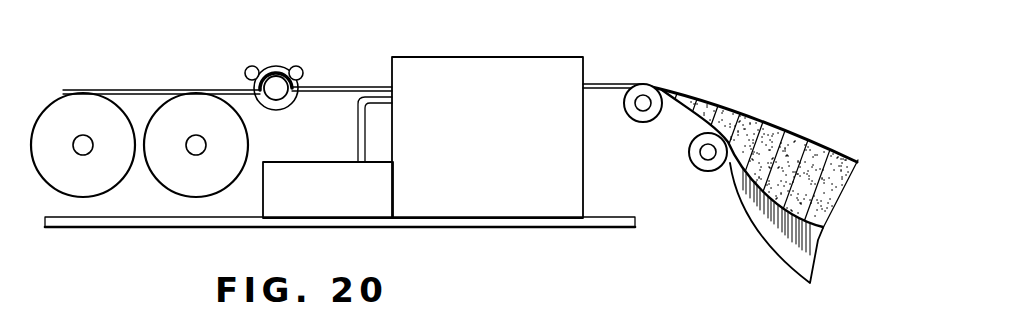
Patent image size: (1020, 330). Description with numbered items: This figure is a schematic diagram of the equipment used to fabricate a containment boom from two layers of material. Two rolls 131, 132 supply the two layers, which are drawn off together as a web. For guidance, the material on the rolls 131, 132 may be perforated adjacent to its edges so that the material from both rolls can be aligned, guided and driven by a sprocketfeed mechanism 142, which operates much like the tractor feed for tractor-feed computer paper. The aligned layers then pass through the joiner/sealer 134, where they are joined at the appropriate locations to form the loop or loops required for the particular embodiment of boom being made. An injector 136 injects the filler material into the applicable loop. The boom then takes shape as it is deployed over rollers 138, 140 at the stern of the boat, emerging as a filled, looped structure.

The roll 131 is at (68, 102).
The roll 132 is at (182, 103).
The sprocketfeed mechanism 142 is at (275, 67).
The injector 136 is at (357, 205).
The joiner/sealer 134 is at (520, 203).
The roller 138 is at (635, 116).
The roller 140 is at (703, 167).